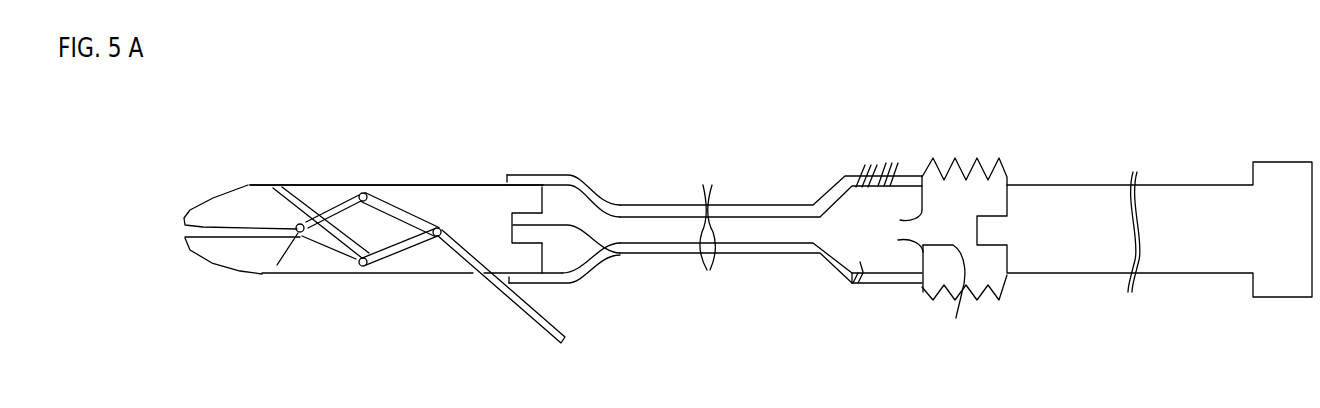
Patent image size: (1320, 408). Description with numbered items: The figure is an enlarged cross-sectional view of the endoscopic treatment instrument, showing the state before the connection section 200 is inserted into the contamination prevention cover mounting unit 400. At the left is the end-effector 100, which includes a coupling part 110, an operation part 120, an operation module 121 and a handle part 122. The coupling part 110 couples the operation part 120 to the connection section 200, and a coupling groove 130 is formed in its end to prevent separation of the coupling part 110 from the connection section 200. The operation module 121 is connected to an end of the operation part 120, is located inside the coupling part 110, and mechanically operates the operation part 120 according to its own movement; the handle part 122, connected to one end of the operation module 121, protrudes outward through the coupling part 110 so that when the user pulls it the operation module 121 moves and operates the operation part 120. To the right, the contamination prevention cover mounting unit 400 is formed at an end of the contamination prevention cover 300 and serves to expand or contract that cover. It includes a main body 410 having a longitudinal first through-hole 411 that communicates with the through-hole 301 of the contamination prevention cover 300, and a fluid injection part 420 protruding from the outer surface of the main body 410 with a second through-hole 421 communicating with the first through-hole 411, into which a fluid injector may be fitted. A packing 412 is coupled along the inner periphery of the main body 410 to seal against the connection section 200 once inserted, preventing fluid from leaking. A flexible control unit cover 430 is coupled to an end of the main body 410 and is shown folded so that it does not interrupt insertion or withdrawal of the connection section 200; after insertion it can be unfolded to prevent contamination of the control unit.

The end-effector 100 is at (319, 288).
The coupling part 110 is at (403, 185).
The operation part 120 is at (249, 185).
The operation module 121 is at (391, 255).
The handle part 122 is at (530, 326).
The coupling groove 130 is at (586, 258).
The connection section 200 is at (1163, 200).
The contamination prevention cover 300 is at (739, 204).
The through-hole 301 is at (760, 228).
The contamination prevention cover mounting unit 400 is at (950, 148).
The main body 410 is at (898, 285).
The first through-hole 411 is at (858, 287).
The packing 412 is at (956, 318).
The fluid injection part 420 is at (866, 175).
The second through-hole 421 is at (883, 167).
The control unit cover 430 is at (1010, 163).